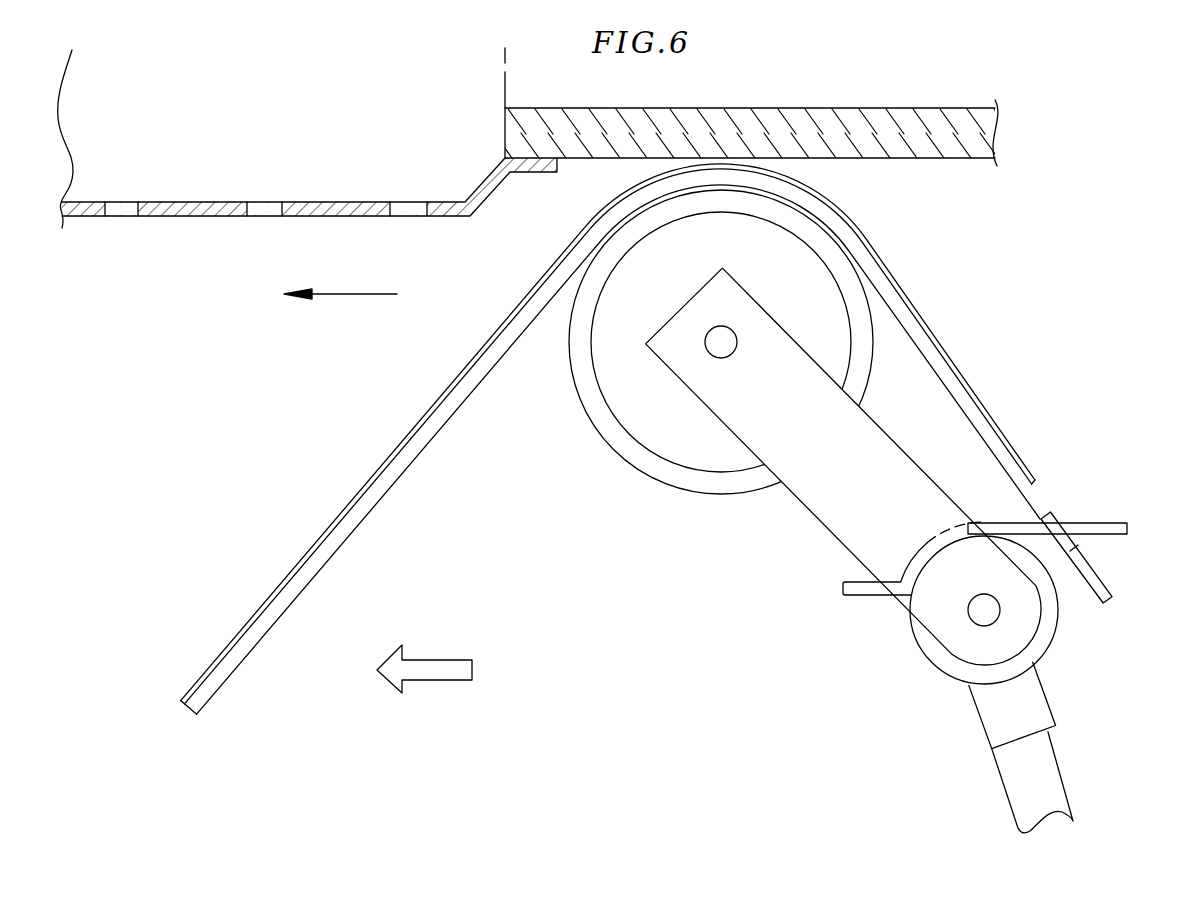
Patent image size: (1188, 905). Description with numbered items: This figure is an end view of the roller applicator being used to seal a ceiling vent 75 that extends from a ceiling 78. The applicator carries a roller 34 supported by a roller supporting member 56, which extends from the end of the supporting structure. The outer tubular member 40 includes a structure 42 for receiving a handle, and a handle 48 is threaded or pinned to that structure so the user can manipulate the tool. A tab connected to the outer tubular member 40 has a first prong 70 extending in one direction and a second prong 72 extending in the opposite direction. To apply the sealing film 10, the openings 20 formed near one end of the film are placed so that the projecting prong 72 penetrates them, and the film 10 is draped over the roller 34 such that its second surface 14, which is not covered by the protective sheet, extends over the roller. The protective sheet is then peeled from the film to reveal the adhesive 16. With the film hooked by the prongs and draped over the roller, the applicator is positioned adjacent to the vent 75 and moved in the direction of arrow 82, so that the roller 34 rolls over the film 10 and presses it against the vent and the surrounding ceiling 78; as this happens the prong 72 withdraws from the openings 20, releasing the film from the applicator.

The sealing film 10 is at (608, 439).
The second surface 14 is at (380, 502).
The adhesive 16 is at (333, 523).
The openings 20 is at (1053, 508).
The roller 34 is at (677, 488).
The outer tubular member 40 is at (933, 660).
The structure for receiving a handle 42 is at (1047, 688).
The handle 48 is at (1058, 745).
The roller supporting member 56 is at (840, 493).
The first prong 70 is at (853, 600).
The second prong 72 is at (1098, 522).
The ceiling vent 75 is at (198, 217).
The ceiling 78 is at (851, 146).
The arrow 82 is at (433, 670).